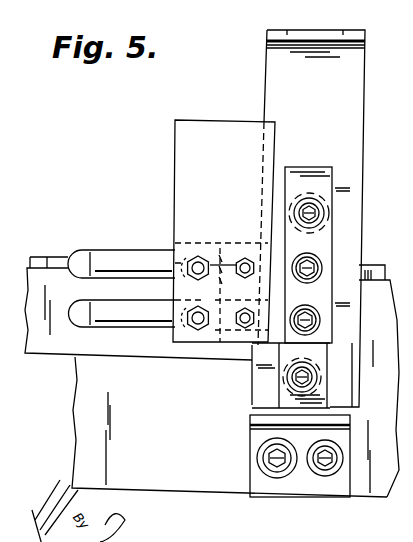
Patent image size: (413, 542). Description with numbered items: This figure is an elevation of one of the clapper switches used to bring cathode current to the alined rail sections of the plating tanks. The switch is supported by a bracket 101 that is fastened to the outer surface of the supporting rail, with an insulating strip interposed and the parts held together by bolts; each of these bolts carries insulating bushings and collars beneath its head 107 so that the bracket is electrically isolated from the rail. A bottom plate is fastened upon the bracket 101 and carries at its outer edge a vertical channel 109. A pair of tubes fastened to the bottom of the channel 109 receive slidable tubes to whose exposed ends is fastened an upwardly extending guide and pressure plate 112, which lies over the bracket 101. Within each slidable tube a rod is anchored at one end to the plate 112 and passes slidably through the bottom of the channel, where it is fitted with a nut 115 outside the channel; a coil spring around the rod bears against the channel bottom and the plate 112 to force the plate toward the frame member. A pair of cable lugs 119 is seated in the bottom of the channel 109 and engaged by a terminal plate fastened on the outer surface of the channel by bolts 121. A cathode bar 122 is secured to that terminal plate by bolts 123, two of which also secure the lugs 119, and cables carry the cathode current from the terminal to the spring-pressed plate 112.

The bracket 101 is at (265, 483).
The head of the bolt 107 is at (280, 467).
The vertical channel 109 is at (290, 353).
The guide and pressure plate 112 is at (288, 63).
The nut 115 is at (312, 214).
The lugs 119 is at (150, 262).
The bolts 121 is at (316, 266).
The cathode bar 122 is at (195, 145).
The bolts 123 is at (193, 330).